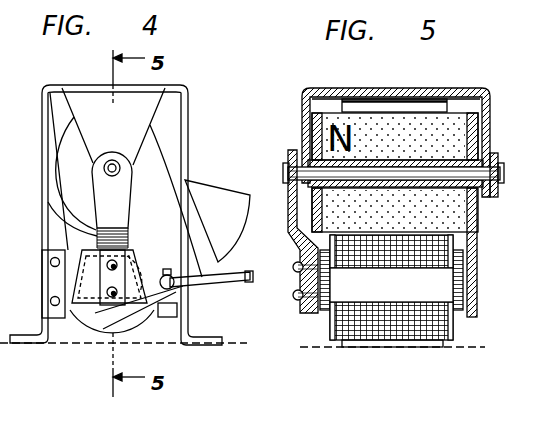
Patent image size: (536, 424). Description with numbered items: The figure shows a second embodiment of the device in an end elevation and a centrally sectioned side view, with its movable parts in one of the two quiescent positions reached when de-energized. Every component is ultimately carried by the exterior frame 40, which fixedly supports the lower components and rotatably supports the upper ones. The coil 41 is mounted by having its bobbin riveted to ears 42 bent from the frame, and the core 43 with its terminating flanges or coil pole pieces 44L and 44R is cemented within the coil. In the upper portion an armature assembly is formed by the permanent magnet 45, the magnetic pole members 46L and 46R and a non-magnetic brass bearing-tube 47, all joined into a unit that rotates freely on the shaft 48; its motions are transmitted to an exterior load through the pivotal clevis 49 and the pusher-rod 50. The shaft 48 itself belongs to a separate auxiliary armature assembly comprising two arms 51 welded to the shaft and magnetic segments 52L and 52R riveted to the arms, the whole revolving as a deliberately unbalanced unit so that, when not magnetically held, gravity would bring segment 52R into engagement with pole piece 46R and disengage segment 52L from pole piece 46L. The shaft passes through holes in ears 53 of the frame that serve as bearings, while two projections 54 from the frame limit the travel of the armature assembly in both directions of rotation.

In FIG. 4, the exterior frame 40 is at (45, 201).
In FIG. 5, the exterior frame 40 is at (464, 91).
In FIG. 4, the coil 41 is at (135, 320).
In FIG. 5, the coil 41 is at (403, 329).
In FIG. 4, the ears 42 is at (52, 293).
In FIG. 5, the core 43 is at (405, 293).
In FIG. 5, the coil pole piece 44L is at (325, 314).
In FIG. 5, the coil pole piece 44R is at (462, 314).
In FIG. 5, the permanent magnet 45 is at (364, 219).
In FIG. 4, the magnet pole member 46L is at (182, 241).
In FIG. 5, the magnet pole member 46R is at (478, 257).
In FIG. 5, the bearing-tube 47 is at (405, 162).
In FIG. 4, the shaft 48 is at (108, 162).
In FIG. 5, the shaft 48 is at (448, 170).
In FIG. 4, the pivotal clevis 49 is at (180, 288).
In FIG. 4, the pusher-rod 50 is at (249, 281).
In FIG. 5, the pusher-rod 50 is at (498, 296).
In FIG. 4, the arms 51 is at (119, 213).
In FIG. 5, the arms 51 is at (298, 242).
In FIG. 4, the magnetic segment 52L is at (82, 308).
In FIG. 4, the magnetic segment 52R is at (232, 226).
In FIG. 5, the ears 53 is at (302, 128).
In FIG. 4, the projections 54 is at (181, 182).